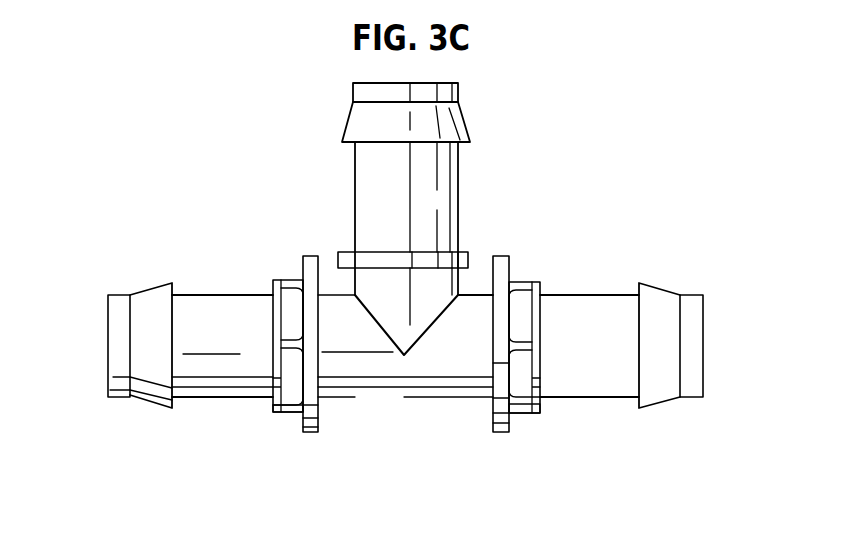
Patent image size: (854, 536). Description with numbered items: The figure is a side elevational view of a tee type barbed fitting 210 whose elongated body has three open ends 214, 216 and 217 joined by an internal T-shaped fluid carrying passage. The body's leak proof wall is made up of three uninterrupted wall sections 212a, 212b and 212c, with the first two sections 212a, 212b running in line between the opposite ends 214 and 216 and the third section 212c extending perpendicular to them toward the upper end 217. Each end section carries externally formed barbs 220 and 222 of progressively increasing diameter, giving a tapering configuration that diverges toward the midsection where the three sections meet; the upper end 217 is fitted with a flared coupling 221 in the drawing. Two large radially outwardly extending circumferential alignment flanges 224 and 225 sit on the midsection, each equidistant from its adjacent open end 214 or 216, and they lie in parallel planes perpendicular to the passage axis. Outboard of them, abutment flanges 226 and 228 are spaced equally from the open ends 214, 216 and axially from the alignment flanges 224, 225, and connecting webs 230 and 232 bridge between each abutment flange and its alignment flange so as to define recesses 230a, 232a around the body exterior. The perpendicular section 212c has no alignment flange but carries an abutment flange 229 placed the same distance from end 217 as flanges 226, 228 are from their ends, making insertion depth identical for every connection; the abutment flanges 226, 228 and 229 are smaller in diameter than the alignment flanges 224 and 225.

The tee fitting 210 is at (572, 108).
The open end 217 is at (357, 92).
The flared coupling 221 is at (470, 136).
The wall section 212c is at (437, 196).
The abutment flange 229 is at (467, 253).
The alignment flange 224 is at (316, 258).
The alignment flange 225 is at (502, 262).
The open end 214 is at (122, 308).
The open end 216 is at (672, 297).
The barb 220 is at (157, 404).
The barb 222 is at (653, 400).
The wall section 212a is at (205, 393).
The wall section 212b is at (603, 392).
The connecting web 230 is at (297, 284).
The recess 230a is at (290, 323).
The connecting web 232 is at (522, 283).
The recess 232a is at (523, 318).
The abutment flange 226 is at (276, 410).
The abutment flange 228 is at (536, 412).